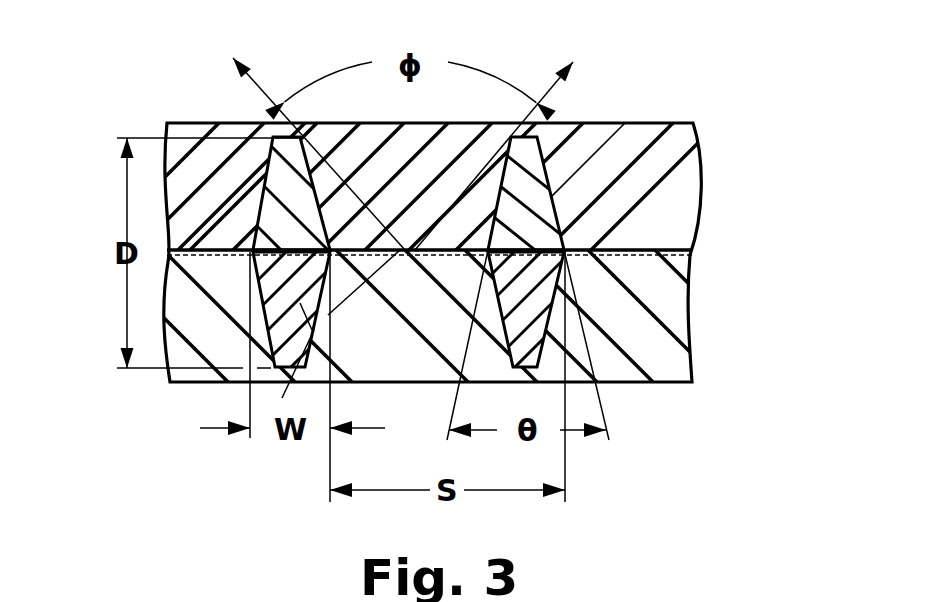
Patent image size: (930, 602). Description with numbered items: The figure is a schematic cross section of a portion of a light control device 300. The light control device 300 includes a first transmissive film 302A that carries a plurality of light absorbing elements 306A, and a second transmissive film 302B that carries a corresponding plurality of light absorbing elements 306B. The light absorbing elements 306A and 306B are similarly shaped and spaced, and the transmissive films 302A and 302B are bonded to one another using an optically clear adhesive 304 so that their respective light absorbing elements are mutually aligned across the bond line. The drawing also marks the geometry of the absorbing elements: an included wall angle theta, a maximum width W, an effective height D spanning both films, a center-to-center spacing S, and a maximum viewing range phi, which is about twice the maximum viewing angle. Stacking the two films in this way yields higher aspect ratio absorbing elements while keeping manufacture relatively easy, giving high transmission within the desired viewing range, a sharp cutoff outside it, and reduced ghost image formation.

The light control device 300 is at (722, 88).
The first transmissive film 302A is at (655, 175).
The second transmissive film 302B is at (667, 297).
The optically clear adhesive 304 is at (692, 248).
The light absorbing elements 306A is at (528, 192).
The light absorbing elements 306B is at (540, 268).